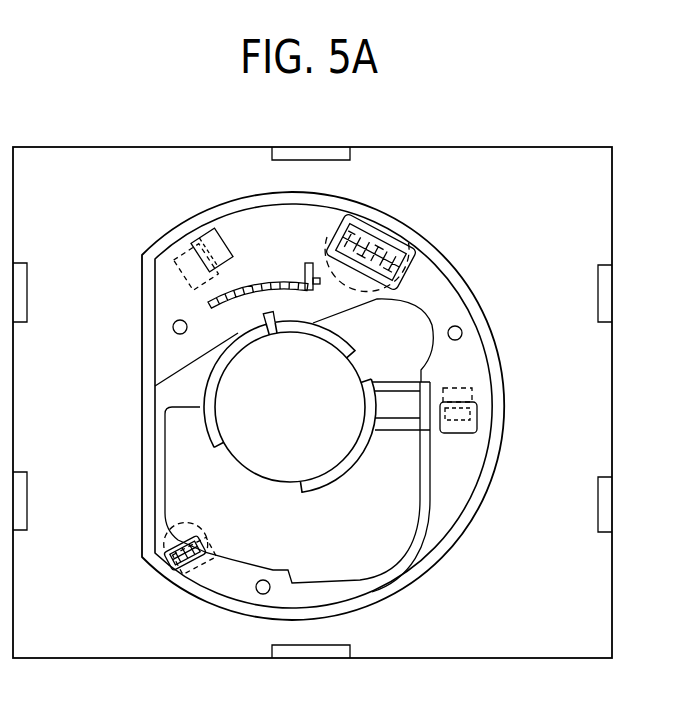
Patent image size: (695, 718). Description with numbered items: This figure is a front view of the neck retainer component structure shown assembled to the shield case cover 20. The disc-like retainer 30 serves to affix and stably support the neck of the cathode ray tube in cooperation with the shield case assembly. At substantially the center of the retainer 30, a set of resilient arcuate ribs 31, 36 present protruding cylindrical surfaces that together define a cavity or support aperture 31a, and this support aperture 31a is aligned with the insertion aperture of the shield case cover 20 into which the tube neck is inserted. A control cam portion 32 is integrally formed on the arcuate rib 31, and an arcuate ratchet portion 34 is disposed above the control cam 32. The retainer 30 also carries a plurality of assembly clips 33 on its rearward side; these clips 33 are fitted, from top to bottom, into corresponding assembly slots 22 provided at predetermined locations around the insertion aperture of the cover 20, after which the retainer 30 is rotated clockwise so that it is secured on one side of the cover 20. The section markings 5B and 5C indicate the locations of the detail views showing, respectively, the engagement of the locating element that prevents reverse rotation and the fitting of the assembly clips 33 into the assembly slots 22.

The shield case cover 20 is at (583, 191).
The retainer 30 is at (230, 208).
The arcuate rib 31 is at (212, 387).
The support aperture 31a is at (322, 390).
The control cam portion 32 is at (155, 386).
The assembly clip 33 is at (186, 234).
The arcuate ratchet portion 34 is at (302, 283).
The arcuate rib 36 is at (316, 484).
The assembly slot 22 is at (193, 257).
The section line 5B is at (396, 245).
The section line 5C is at (188, 574).